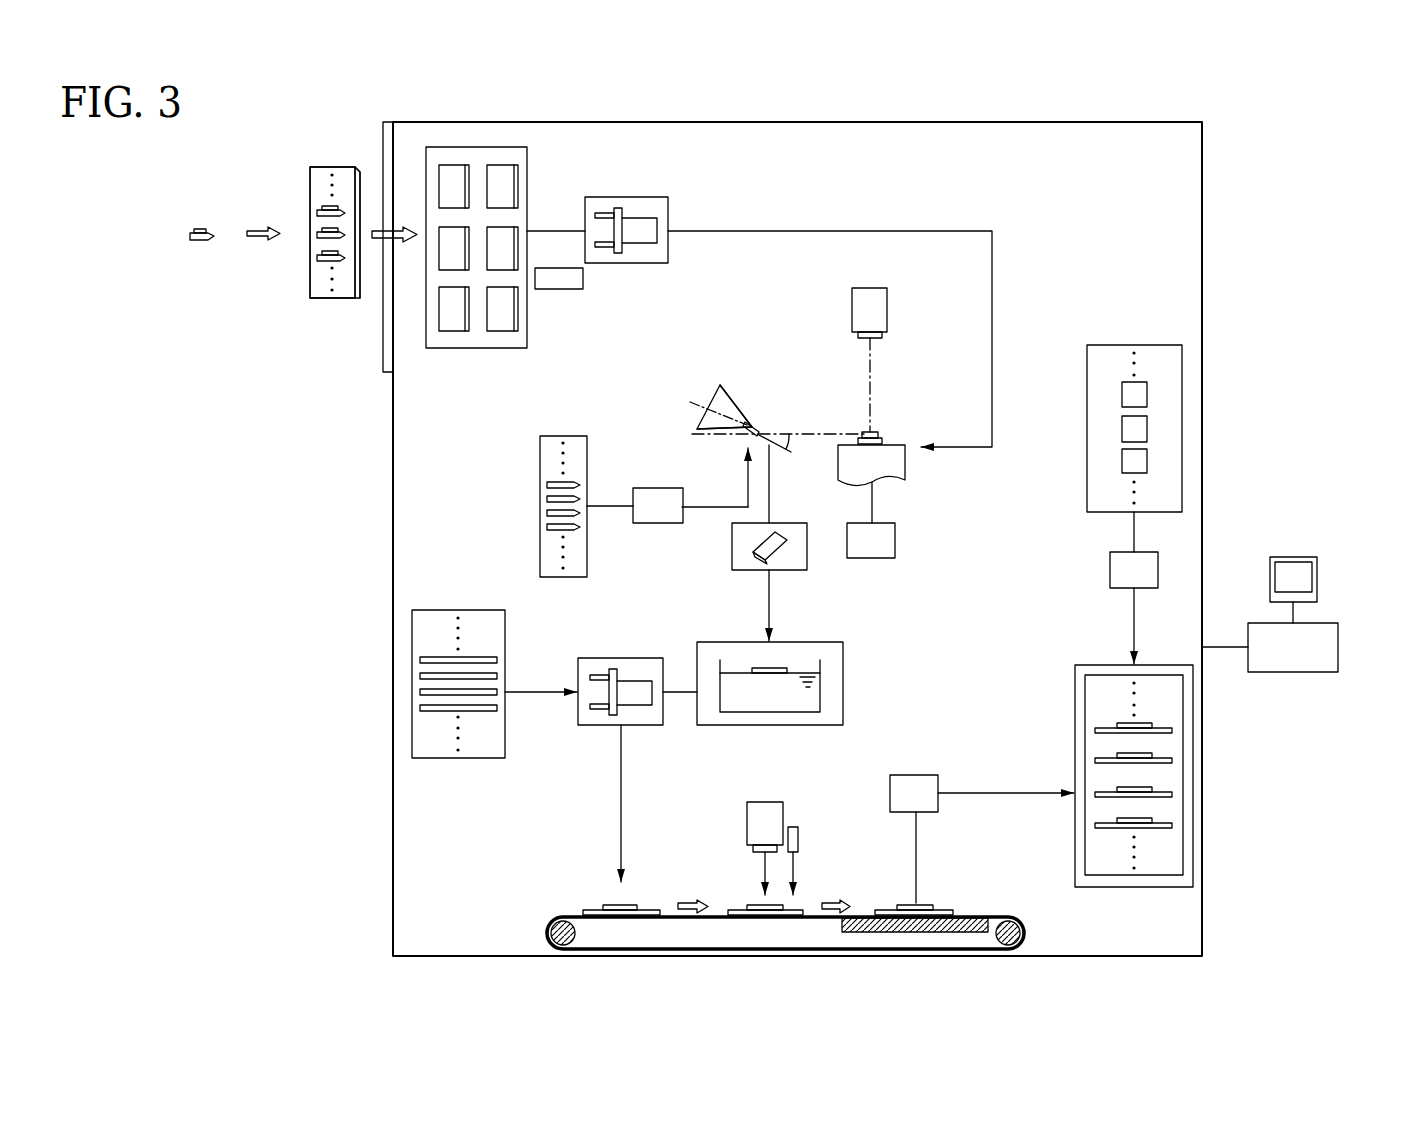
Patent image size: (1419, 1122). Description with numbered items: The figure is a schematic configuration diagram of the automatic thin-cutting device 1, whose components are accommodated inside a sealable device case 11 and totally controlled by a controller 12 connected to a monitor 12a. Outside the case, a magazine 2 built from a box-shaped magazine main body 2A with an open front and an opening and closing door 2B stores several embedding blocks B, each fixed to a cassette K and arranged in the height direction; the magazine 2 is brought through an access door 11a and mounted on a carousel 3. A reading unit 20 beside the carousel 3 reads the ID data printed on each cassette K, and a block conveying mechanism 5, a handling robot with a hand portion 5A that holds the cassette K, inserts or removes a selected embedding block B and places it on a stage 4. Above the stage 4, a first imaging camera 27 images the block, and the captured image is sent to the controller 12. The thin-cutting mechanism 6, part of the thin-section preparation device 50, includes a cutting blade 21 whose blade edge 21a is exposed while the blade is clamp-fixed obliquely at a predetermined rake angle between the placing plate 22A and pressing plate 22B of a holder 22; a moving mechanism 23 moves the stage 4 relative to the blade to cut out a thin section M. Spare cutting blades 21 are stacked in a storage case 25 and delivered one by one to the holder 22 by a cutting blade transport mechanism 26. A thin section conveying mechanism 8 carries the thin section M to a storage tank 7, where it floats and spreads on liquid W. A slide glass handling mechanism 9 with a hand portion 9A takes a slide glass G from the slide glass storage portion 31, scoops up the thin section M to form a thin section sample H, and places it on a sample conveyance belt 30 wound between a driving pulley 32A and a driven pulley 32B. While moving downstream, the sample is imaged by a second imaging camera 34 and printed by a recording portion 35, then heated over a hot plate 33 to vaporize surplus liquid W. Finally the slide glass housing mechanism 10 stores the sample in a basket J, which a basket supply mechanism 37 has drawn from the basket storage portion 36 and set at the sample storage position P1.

The automatic thin-cutting device 1 is at (1264, 139).
The magazine 2 is at (230, 128).
The magazine main body 2A is at (310, 190).
The opening and closing door 2B is at (357, 169).
The carousel 3 is at (505, 146).
The stage 4 is at (904, 463).
The block conveying mechanism 5 is at (662, 196).
The hand portion 5A is at (640, 225).
The thin-cutting mechanism 6 is at (779, 380).
The storage tank 7 is at (818, 682).
The thin section conveying mechanism 8 is at (809, 563).
The slide glass handling mechanism 9 is at (654, 657).
The hand portion 9A is at (635, 685).
The slide glass housing mechanism 10 is at (915, 778).
The device case 11 is at (1203, 230).
The access door 11a is at (383, 343).
The controller 12 is at (1333, 647).
The monitor 12a is at (1318, 578).
The reading unit 20 is at (558, 290).
The cutting blade 21 is at (751, 422).
The blade edge 21a is at (768, 433).
The holder 22 is at (718, 382).
The placing plate 22A is at (702, 415).
The pressing plate 22B is at (716, 398).
The moving mechanism 23 is at (892, 542).
The storage case 25 is at (540, 554).
The cutting blade transport mechanism 26 is at (658, 494).
The first imaging camera 27 is at (888, 308).
The sample conveyance belt 30 is at (667, 951).
The slide glass storage portion 31 is at (412, 732).
The driving pulley 32A is at (550, 930).
The driven pulley 32B is at (1021, 928).
The hot plate 33 is at (917, 932).
The second imaging camera 34 is at (751, 823).
The recording portion 35 is at (799, 838).
The basket storage portion 36 is at (1134, 344).
The basket supply mechanism 37 is at (1115, 570).
The thin-section preparation device 50 is at (800, 380).
The embedding block B is at (194, 230).
The cassette K is at (200, 241).
The slide glass G is at (420, 660).
The thin section sample H is at (586, 907).
The basket J is at (1141, 395).
The thin section M is at (754, 556).
The liquid W is at (770, 703).
The sample storage position P1 is at (1075, 698).